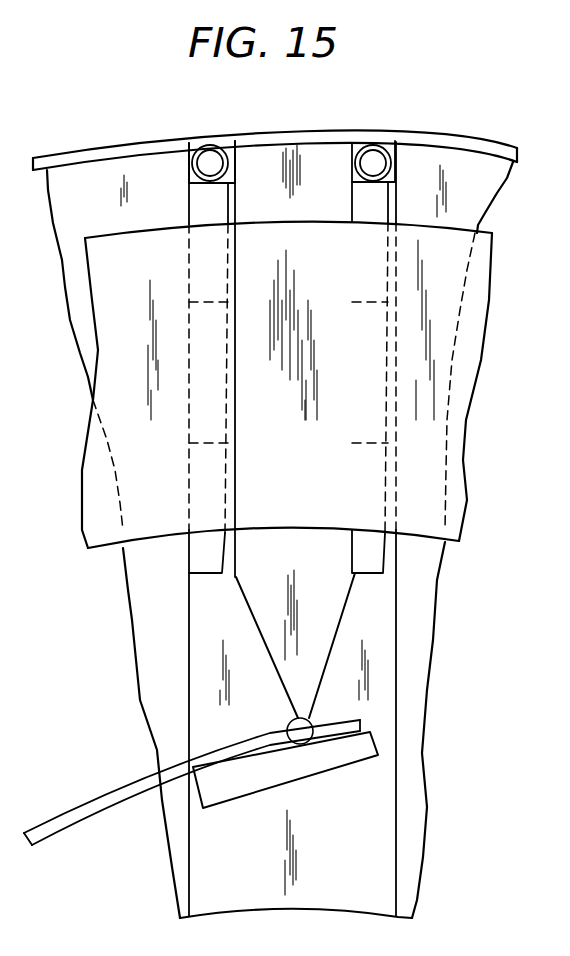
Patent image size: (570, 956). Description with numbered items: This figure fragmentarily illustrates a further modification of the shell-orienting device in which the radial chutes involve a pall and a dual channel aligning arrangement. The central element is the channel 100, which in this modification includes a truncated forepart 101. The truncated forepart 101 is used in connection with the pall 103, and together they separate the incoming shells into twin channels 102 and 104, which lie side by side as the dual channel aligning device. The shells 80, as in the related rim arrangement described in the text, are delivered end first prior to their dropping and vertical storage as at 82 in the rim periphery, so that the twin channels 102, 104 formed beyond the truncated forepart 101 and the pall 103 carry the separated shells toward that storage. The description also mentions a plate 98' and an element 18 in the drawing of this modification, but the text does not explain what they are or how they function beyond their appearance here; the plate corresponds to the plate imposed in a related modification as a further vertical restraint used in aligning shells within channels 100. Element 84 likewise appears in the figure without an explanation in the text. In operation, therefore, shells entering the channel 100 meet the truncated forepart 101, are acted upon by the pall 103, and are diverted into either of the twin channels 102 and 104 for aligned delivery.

The plate 18 is at (292, 768).
The shells 80 is at (202, 550).
The vertical storage 82 is at (212, 158).
The roller bearing 84 is at (392, 162).
The side wall edge 98' is at (478, 405).
The channel 100 is at (383, 845).
The truncated forepart 101 is at (305, 678).
The twin channel 102 is at (213, 583).
The pall 103 is at (290, 722).
The twin channel 104 is at (372, 583).